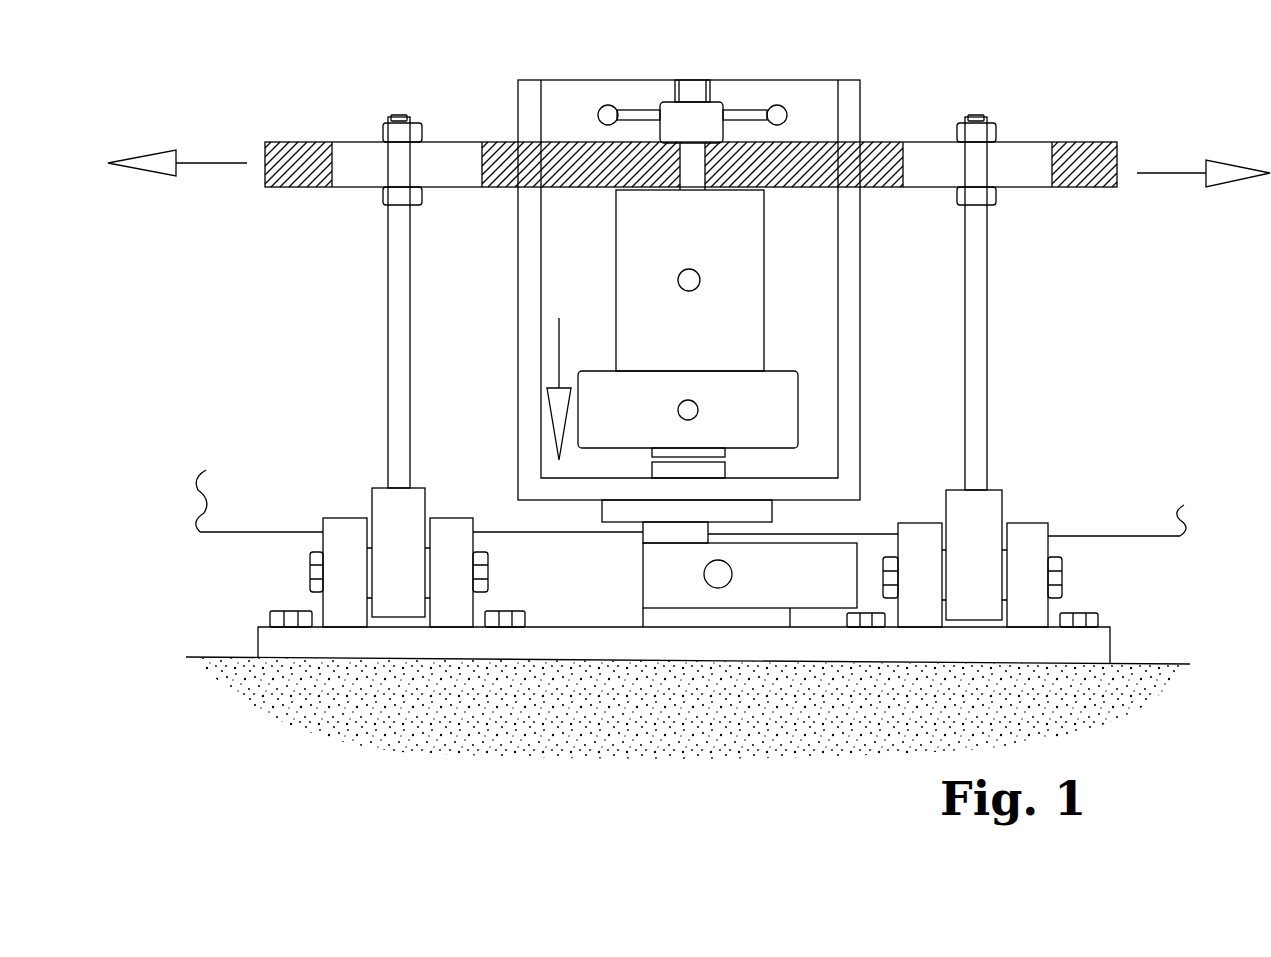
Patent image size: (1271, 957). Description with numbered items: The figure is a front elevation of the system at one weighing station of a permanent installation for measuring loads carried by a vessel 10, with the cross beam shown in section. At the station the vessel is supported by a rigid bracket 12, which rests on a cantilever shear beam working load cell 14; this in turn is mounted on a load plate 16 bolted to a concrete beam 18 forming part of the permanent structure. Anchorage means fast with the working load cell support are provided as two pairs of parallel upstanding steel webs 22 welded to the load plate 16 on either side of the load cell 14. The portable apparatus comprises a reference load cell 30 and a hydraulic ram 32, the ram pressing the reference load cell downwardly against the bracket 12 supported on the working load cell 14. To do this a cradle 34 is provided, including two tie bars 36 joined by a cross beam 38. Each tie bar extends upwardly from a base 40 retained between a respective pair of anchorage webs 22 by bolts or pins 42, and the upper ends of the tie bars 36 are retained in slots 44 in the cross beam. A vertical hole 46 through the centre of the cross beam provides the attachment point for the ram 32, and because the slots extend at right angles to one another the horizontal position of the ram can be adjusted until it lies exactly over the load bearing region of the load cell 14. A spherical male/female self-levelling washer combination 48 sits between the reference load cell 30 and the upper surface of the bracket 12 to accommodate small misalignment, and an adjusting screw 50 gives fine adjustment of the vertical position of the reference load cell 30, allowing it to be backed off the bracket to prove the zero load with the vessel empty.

The vessel 10 is at (248, 513).
The rigid bracket 12 is at (847, 448).
The cantilever shear beam working load cell 14 is at (668, 588).
The load plate 16 is at (323, 644).
The concrete beam 18 is at (1138, 669).
The upstanding steel webs 22 is at (447, 613).
The reference load cell 30 is at (770, 392).
The hydraulic ram 32 is at (748, 280).
The cradle 34 is at (315, 96).
The tie bars 36 is at (404, 430).
The cross beam 38 is at (885, 153).
The base 40 is at (382, 508).
The bolts or pins 42 is at (488, 571).
The slots in the cross beam 44 is at (453, 147).
The vertical hole 46 is at (681, 165).
The self-levelling washer combination 48 is at (654, 472).
The adjusting screw 50 is at (713, 113).